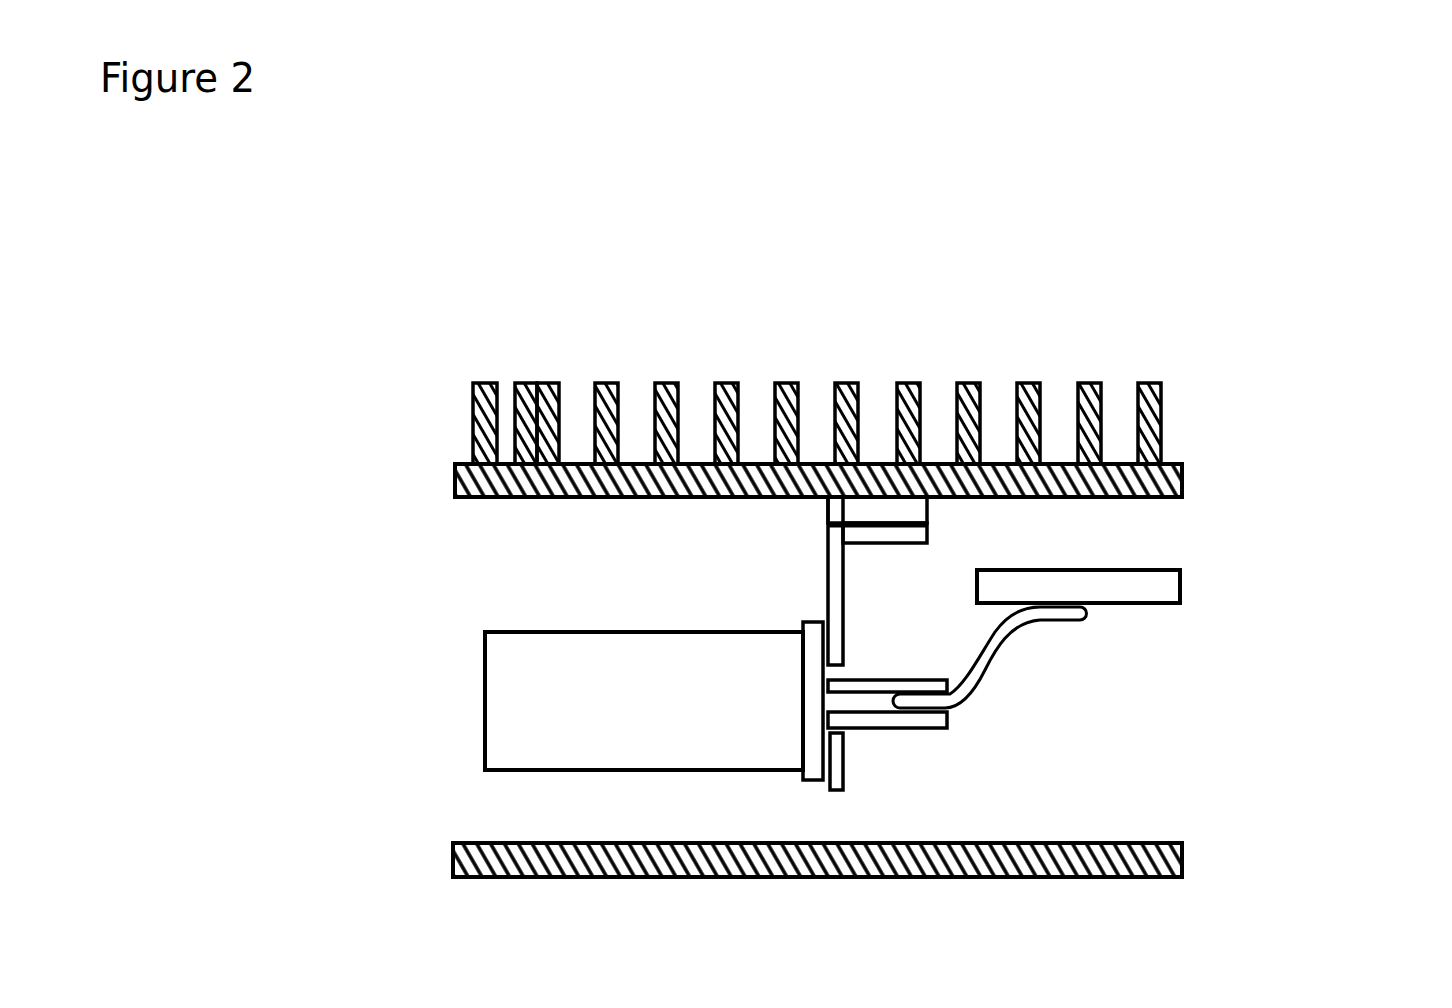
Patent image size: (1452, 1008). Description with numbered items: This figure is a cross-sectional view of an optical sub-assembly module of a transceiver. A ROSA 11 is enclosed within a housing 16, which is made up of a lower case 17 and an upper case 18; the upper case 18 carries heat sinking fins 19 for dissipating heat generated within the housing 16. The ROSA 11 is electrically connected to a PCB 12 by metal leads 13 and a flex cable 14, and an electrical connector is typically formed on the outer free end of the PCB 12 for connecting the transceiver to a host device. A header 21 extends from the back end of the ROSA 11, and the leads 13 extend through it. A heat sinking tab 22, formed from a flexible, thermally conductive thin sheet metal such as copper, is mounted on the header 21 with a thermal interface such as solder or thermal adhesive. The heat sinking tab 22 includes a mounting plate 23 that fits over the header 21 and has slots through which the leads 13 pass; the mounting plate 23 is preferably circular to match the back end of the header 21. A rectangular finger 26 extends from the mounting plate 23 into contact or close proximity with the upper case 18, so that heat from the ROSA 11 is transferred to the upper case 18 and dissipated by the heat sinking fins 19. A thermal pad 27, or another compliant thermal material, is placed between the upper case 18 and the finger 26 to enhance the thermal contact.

The ROSA 11 is at (535, 690).
The PCB 12 is at (1190, 592).
The metal leads 13 is at (937, 730).
The flex cable 14 is at (1018, 628).
The housing 16 is at (470, 320).
The lower case 17 is at (455, 845).
The upper case 18 is at (495, 485).
The heat sinking fins 19 is at (958, 383).
The header 21 is at (823, 618).
The heat sinking tab 22 is at (835, 565).
The mounting plate 23 is at (837, 748).
The rectangular finger 26 is at (877, 545).
The thermal pad 27 is at (918, 503).